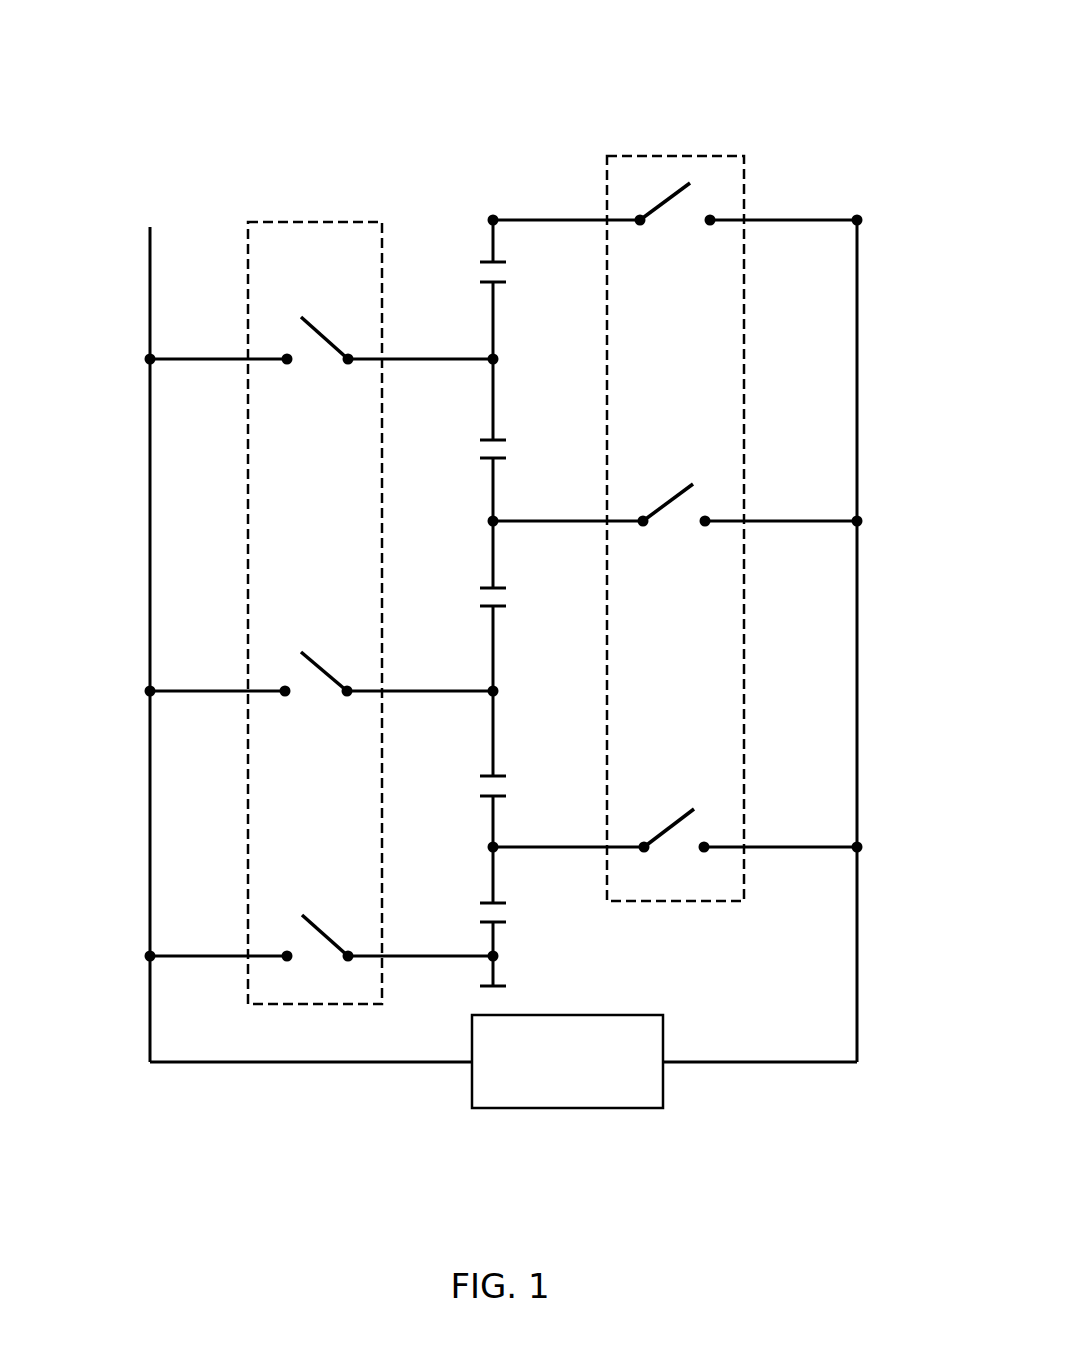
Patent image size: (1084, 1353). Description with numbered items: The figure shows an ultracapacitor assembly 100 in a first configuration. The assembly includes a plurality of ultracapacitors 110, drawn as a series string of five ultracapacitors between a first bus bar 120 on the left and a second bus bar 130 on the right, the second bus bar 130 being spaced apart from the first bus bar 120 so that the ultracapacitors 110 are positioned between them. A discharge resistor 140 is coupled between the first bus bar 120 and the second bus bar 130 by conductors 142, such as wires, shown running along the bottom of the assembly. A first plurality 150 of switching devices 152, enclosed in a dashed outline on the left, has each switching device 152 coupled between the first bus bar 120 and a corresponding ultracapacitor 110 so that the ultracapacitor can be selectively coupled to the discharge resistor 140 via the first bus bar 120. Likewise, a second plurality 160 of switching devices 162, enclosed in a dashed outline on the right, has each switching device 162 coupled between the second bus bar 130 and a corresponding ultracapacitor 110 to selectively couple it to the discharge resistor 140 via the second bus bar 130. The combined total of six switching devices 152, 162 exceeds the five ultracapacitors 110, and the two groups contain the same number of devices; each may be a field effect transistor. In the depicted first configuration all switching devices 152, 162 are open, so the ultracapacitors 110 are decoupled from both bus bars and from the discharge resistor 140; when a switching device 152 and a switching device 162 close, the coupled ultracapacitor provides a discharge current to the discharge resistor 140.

The ultracapacitor assembly 100 is at (722, 86).
The ultracapacitors 110 is at (480, 271).
The first bus bar 120 is at (148, 268).
The second bus bar 130 is at (859, 285).
The discharge resistor 140 is at (567, 1061).
The conductors 142 is at (258, 1063).
The first plurality of switching devices 150 is at (288, 216).
The switching device 152 is at (296, 336).
The second plurality of switching devices 160 is at (760, 346).
The switching device 162 is at (678, 230).